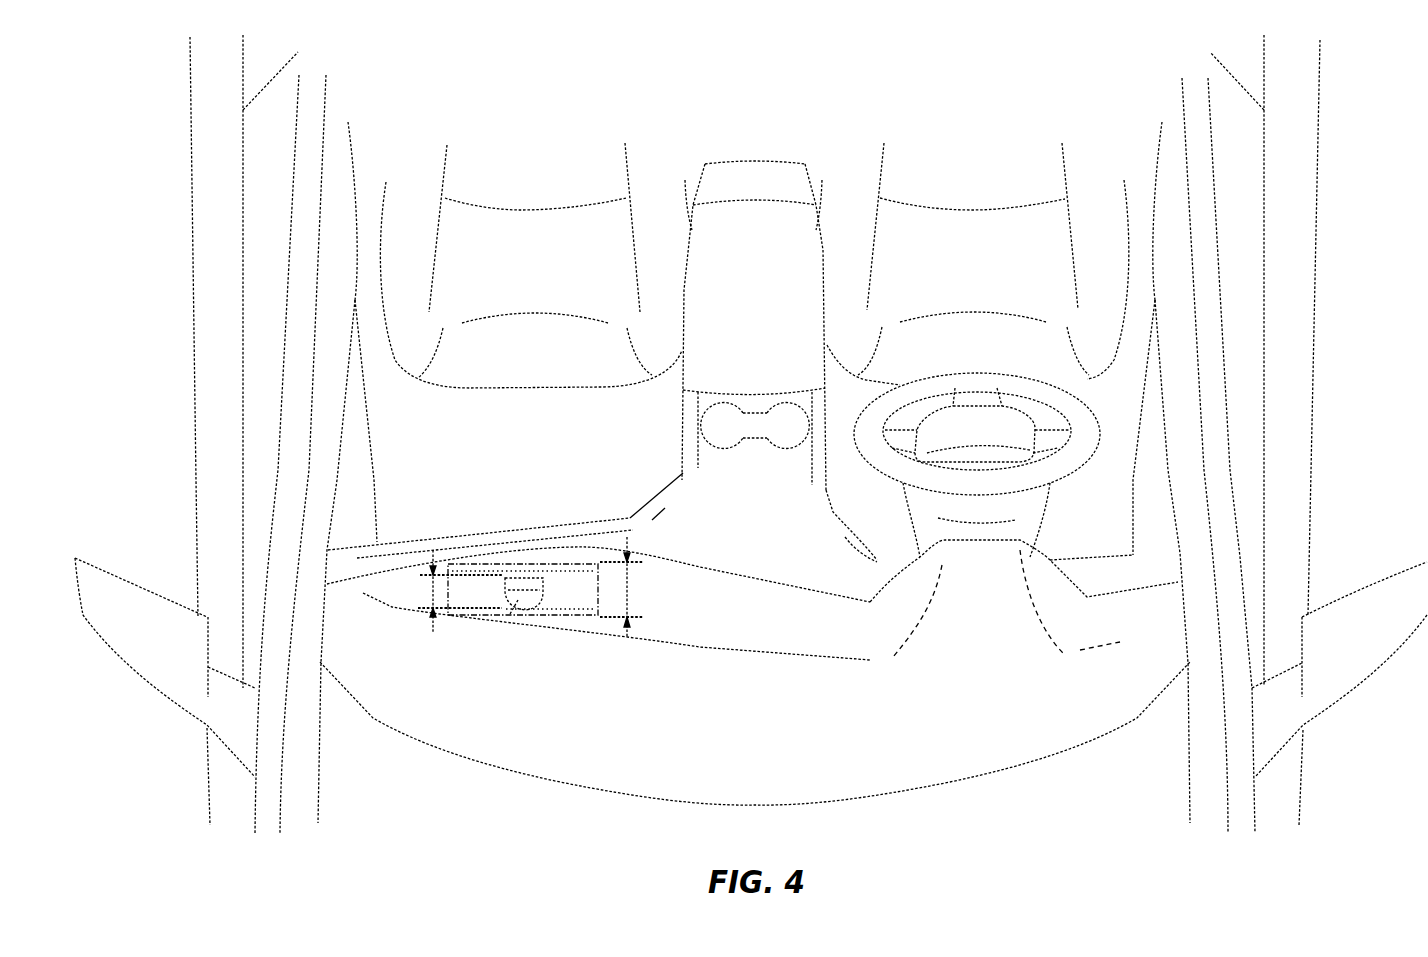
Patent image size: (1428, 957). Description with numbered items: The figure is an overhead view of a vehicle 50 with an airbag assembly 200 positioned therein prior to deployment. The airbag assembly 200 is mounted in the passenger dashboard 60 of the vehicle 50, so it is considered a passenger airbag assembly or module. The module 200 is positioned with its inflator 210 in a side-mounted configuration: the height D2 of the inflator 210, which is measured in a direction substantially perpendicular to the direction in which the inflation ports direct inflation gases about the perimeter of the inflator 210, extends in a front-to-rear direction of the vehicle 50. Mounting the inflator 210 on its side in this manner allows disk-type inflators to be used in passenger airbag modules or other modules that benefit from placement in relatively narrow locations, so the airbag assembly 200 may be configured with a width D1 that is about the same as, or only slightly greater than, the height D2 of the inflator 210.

The vehicle 50 is at (154, 296).
The passenger dashboard 60 is at (417, 690).
The airbag assembly 200 is at (587, 627).
The inflator 210 is at (508, 627).
The width D1 is at (621, 587).
The height D2 is at (460, 591).